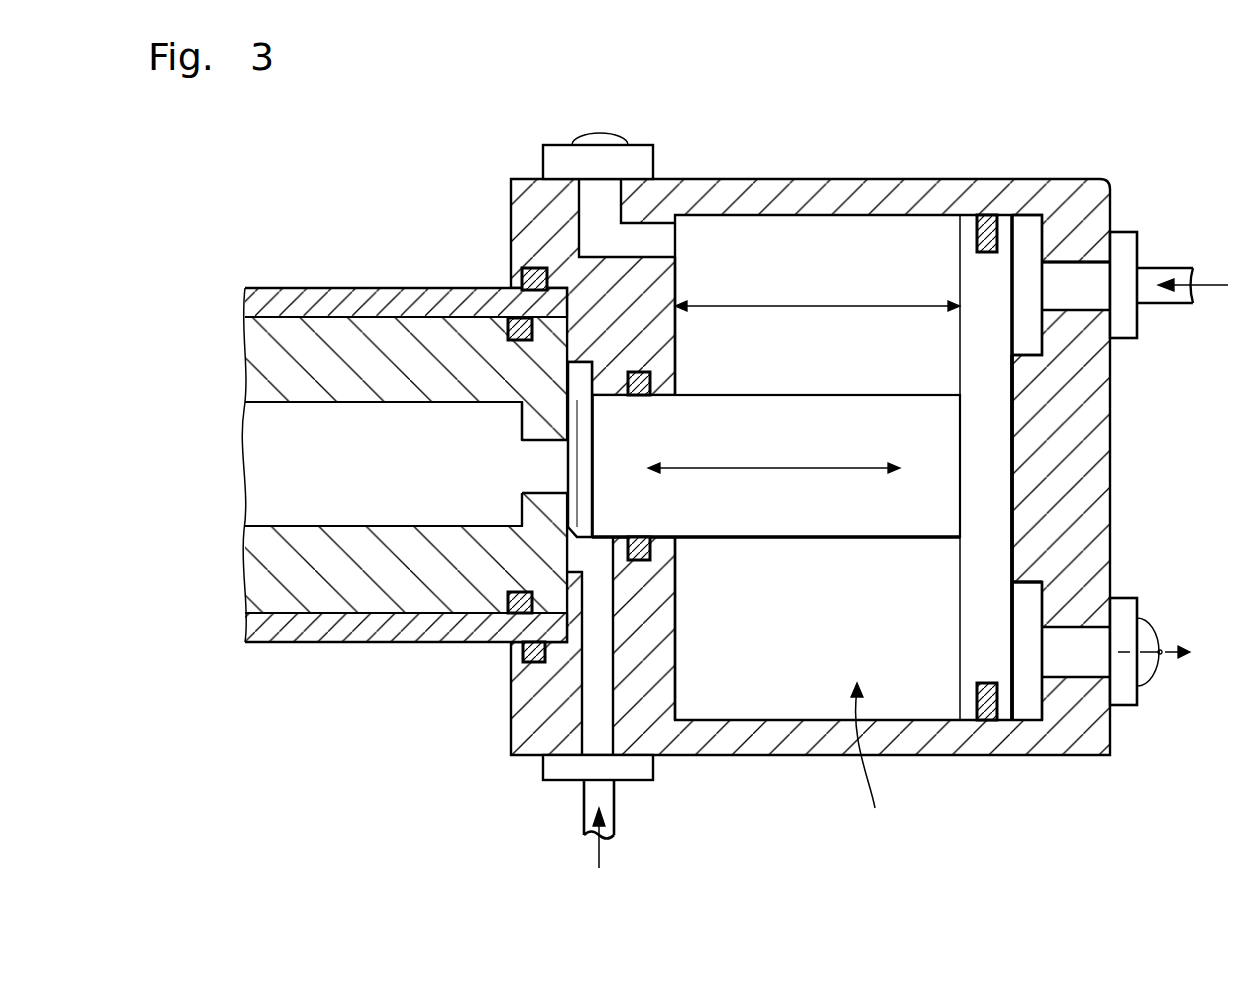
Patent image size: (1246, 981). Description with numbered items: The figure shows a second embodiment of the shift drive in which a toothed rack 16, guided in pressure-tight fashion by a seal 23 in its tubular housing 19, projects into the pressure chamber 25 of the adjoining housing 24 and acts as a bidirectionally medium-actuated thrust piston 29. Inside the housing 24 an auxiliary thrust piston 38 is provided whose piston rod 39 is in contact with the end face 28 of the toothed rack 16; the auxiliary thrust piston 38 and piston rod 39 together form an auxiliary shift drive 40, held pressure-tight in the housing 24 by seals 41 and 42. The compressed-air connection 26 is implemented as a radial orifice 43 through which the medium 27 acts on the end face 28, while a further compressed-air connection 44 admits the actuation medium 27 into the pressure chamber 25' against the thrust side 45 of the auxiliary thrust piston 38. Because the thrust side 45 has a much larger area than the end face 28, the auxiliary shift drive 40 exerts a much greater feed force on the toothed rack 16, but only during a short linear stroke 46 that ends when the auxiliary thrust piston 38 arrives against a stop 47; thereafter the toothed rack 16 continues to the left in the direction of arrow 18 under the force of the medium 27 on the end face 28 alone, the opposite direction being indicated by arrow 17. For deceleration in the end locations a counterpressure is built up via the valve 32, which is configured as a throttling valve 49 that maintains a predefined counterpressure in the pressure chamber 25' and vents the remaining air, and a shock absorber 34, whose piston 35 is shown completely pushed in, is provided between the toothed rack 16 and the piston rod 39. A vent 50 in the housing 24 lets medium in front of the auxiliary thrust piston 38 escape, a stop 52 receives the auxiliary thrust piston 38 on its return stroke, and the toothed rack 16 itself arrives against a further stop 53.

The toothed rack 16 is at (250, 580).
The stroke direction 17 is at (895, 466).
The arrow 18 is at (650, 466).
The tubular housing 19 is at (318, 625).
The seal 23 is at (508, 615).
The housing 24 is at (1092, 196).
The pressure chamber 25 is at (604, 449).
The pressure chamber 25' is at (1023, 423).
The compressed-air connection 26 is at (649, 767).
The medium 27 is at (1212, 286).
The end face 28 is at (556, 415).
The thrust piston 29 is at (255, 555).
The valve 32 is at (1124, 600).
The shock absorber 34 is at (401, 475).
The piston 35 is at (543, 472).
The auxiliary thrust piston 38 is at (1006, 632).
The piston rod 39 is at (841, 525).
The auxiliary shift drive 40 is at (871, 762).
The seal 41 is at (652, 380).
The seal 42 is at (977, 708).
The radial orifice 43 is at (593, 733).
The compressed-air connection 44 is at (1138, 322).
The thrust side 45 is at (1013, 672).
The linear stroke 46 is at (782, 302).
The stop 47 is at (677, 662).
The throttling valve 49 is at (1152, 630).
The vent 50 is at (606, 140).
The stop 52 is at (1010, 405).
The stop 53 is at (530, 655).